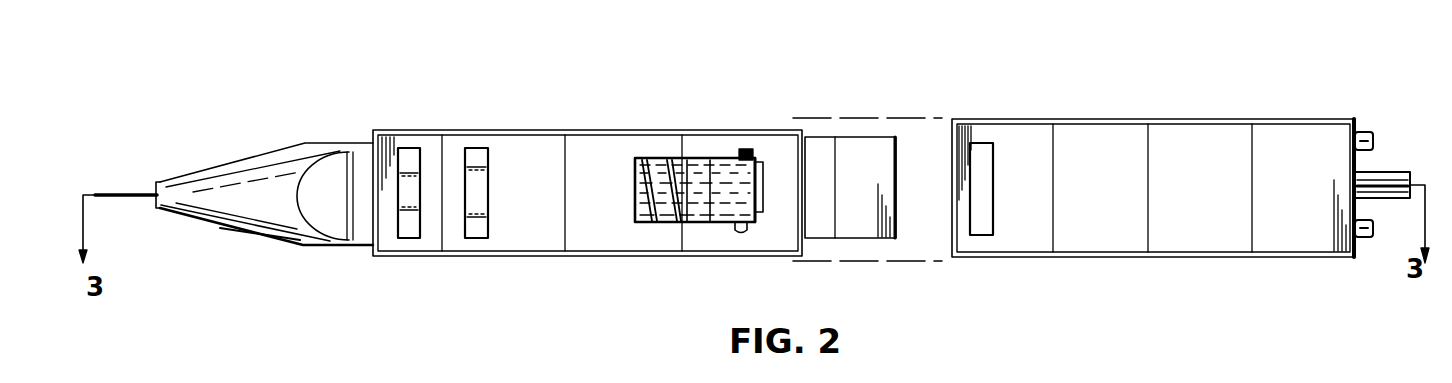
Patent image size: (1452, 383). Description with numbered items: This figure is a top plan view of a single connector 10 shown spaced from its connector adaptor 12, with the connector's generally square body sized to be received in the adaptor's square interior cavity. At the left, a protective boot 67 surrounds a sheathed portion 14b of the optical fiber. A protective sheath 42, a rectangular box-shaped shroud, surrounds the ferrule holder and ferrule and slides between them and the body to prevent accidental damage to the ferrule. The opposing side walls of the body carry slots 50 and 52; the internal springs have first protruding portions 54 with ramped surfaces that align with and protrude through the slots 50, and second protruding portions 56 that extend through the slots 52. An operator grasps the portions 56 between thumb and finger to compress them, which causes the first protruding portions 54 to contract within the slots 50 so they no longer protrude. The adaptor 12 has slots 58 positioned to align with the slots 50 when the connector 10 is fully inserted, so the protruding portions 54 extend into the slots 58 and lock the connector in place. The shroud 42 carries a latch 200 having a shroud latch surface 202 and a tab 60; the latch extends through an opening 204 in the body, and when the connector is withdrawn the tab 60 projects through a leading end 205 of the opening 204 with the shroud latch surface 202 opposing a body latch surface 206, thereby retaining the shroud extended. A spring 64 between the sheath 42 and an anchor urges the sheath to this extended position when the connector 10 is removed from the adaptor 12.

The connector 10 is at (698, 122).
The connector adaptor 12 is at (1133, 100).
The sheathed portion of fiber 14b is at (131, 192).
The protective sheath 42 is at (865, 240).
The slots 50 is at (480, 236).
The slots 52 is at (413, 236).
The first protruding portions 54 is at (475, 157).
The second protruding portions 56 is at (410, 157).
The slots 58 is at (985, 226).
The tab 60 is at (760, 212).
The spring 64 is at (656, 213).
The protective boot 67 is at (244, 157).
The latch 200 is at (727, 200).
The shroud latch surface 202 is at (748, 152).
The opening 204 is at (708, 164).
The leading end 205 is at (765, 170).
The body latch surface 206 is at (738, 231).